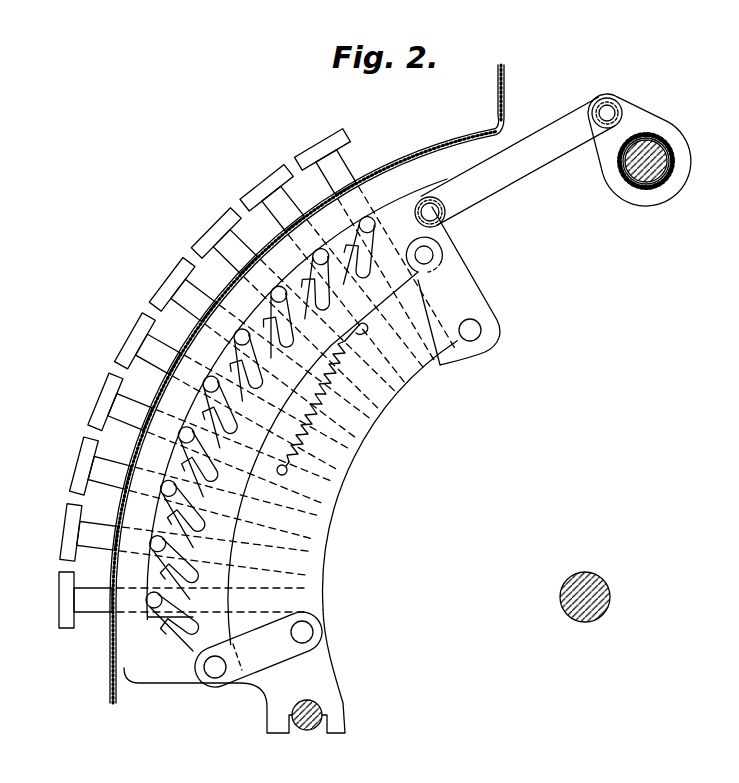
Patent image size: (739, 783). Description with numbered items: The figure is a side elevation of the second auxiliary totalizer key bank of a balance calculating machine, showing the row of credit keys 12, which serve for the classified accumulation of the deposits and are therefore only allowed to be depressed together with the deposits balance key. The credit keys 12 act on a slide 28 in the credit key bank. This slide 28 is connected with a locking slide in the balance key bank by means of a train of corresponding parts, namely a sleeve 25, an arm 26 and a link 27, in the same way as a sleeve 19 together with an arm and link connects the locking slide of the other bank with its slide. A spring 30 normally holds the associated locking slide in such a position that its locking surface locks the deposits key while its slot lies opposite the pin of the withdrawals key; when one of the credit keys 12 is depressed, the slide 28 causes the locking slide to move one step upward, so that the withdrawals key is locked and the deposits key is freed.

The credit keys 12 is at (199, 247).
The sleeve 19 is at (630, 178).
The corresponding part (sleeve) 25 is at (652, 184).
The corresponding part (arm) 26 is at (638, 116).
The corresponding part (link) 27 is at (529, 177).
The slide 28 is at (226, 624).
The spring 30 is at (343, 381).